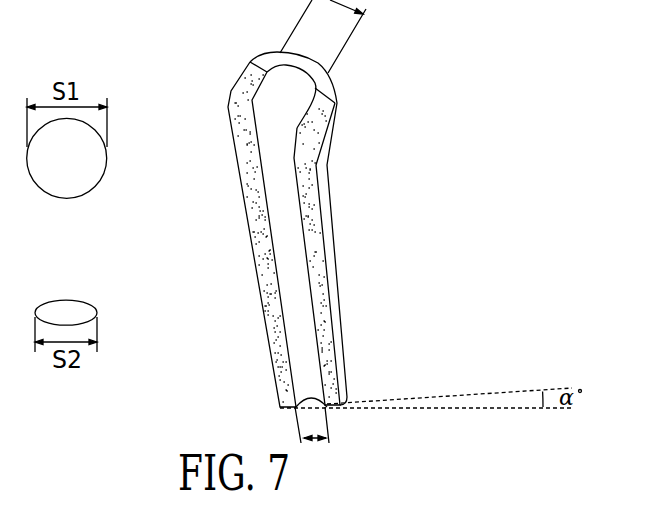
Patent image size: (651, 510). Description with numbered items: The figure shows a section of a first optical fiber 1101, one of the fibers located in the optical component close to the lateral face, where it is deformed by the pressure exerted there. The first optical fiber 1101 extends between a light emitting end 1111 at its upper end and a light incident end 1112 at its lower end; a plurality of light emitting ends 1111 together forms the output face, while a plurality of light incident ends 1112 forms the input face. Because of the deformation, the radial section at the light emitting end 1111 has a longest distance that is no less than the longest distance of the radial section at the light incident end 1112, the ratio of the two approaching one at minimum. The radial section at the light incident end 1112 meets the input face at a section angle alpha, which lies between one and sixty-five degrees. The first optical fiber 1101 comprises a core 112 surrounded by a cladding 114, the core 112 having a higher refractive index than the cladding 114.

The first optical fiber 1101 is at (522, 41).
The light emitting end 1111 is at (303, 80).
The core 112 is at (293, 277).
The cladding 114 is at (347, 358).
The light incident end 1112 is at (293, 395).